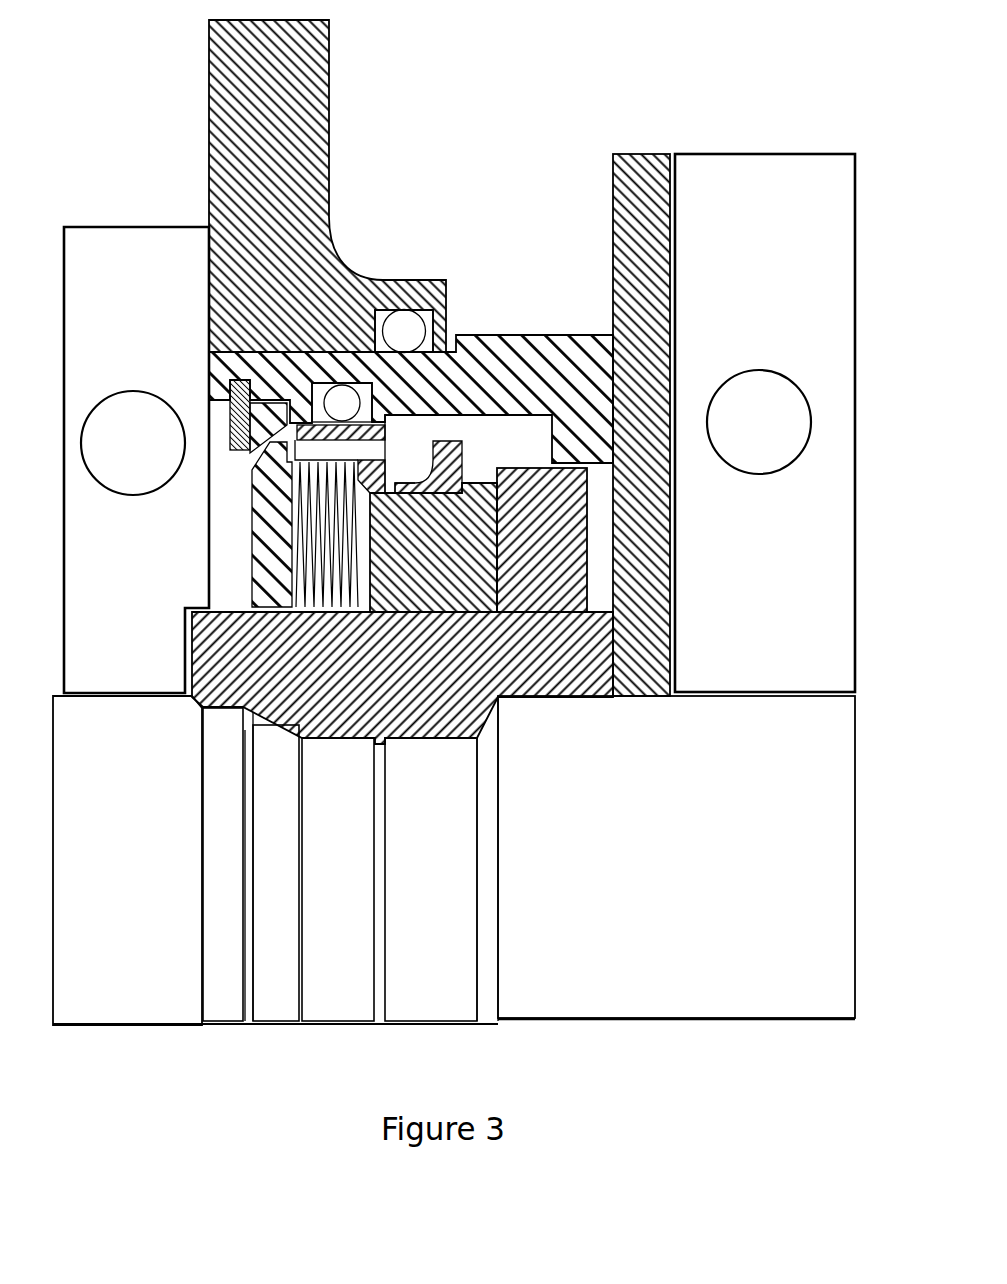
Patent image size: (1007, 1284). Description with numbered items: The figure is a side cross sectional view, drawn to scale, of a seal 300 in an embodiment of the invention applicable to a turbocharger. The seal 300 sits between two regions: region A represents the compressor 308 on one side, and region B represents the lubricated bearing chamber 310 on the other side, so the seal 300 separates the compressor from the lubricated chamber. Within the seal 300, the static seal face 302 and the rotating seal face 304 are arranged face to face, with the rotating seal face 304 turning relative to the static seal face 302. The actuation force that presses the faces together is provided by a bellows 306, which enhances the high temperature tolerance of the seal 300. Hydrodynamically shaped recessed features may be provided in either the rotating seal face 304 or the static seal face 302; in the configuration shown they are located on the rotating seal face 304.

The seal 300 is at (487, 208).
The static seal face 302 is at (495, 526).
The rotating seal face 304 is at (498, 545).
The bellows 306 is at (347, 546).
The compressor 308 is at (112, 293).
The lubricated bearing chamber 310 is at (750, 237).